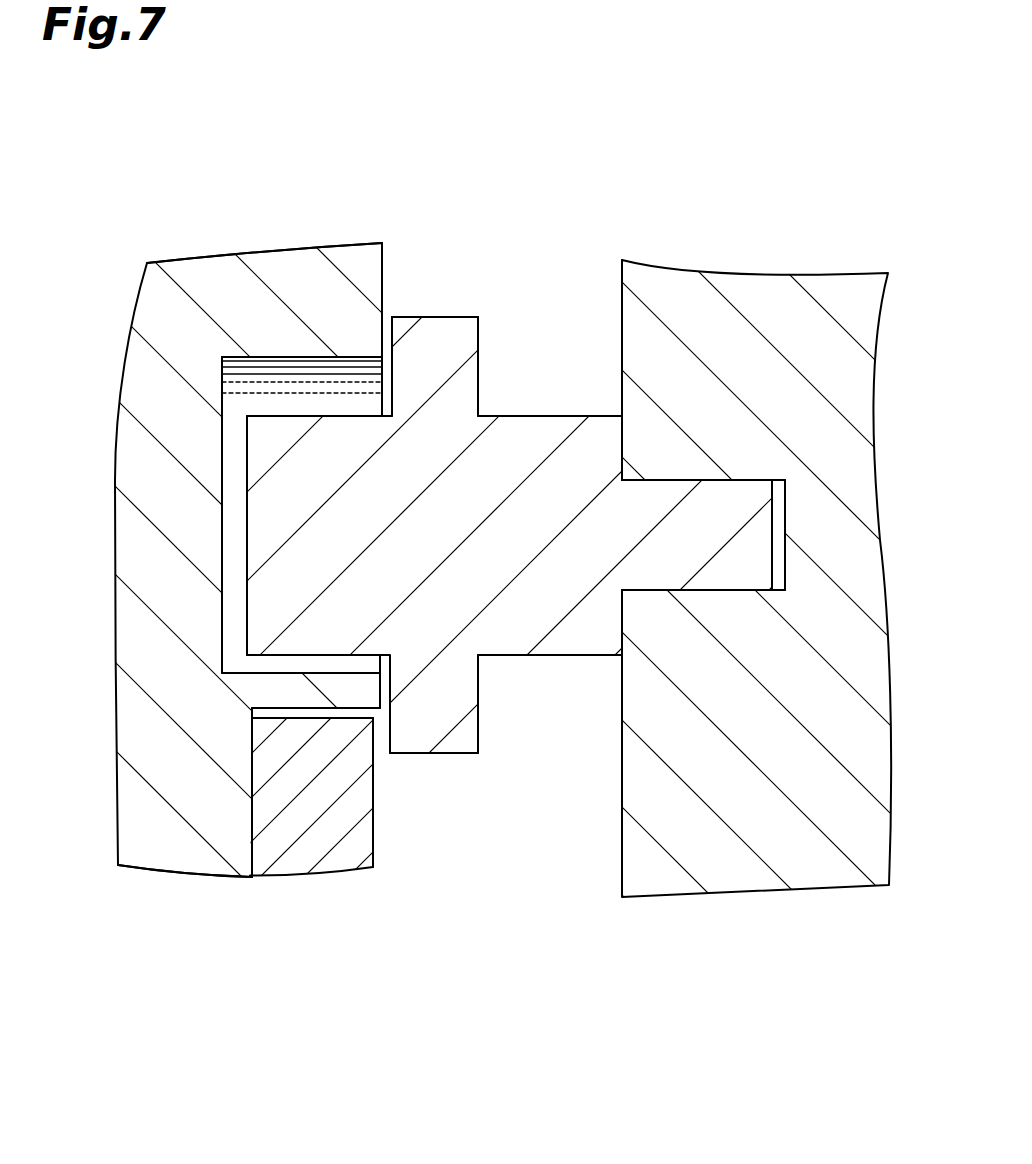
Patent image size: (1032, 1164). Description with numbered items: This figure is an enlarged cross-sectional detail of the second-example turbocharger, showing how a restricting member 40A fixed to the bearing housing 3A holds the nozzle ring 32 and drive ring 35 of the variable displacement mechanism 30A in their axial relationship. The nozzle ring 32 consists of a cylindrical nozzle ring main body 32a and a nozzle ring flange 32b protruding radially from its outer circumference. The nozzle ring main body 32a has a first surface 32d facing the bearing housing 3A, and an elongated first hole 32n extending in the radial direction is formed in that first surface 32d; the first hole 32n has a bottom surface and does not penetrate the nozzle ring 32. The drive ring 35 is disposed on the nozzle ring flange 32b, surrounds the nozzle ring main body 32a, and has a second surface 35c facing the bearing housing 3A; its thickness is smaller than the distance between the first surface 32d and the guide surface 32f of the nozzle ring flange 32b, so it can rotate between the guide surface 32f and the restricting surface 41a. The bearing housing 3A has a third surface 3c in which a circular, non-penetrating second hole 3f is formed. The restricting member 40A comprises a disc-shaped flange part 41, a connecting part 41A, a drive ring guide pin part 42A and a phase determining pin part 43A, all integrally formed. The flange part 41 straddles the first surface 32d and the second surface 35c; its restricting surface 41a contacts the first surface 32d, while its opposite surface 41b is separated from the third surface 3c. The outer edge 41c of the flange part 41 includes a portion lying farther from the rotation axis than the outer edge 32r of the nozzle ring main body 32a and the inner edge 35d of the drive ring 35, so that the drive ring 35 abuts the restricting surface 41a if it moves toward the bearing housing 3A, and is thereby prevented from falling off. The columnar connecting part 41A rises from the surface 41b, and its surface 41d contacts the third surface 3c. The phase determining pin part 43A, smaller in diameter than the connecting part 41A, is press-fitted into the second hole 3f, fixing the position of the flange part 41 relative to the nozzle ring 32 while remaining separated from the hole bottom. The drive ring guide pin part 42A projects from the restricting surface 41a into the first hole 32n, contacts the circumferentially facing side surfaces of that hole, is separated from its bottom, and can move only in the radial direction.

The bearing housing 3A is at (845, 305).
The third surface 3c is at (620, 327).
The second hole 3f is at (719, 480).
The variable displacement mechanism 30A is at (516, 582).
The nozzle ring 32 is at (516, 582).
The nozzle ring main body 32a is at (168, 307).
The nozzle ring flange 32b is at (175, 838).
The first surface 32d is at (382, 262).
The guide surface 32f is at (253, 812).
The first hole 32n is at (295, 370).
The outer edge 32r is at (321, 712).
The drive ring 35 is at (303, 853).
The second surface 35c is at (373, 805).
The inner edge 35d is at (303, 710).
The restricting member 40A is at (516, 546).
The flange part 41 is at (427, 733).
The restricting surface 41a is at (388, 355).
The surface 41b is at (480, 360).
The outer edge 41c is at (460, 755).
The surface 41d is at (622, 613).
The connecting part 41A is at (577, 633).
The drive ring guide pin part 42A is at (272, 447).
The phase determining pin part 43A is at (755, 557).